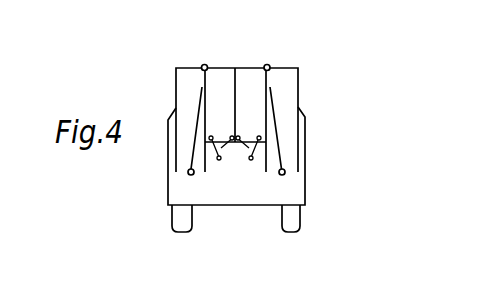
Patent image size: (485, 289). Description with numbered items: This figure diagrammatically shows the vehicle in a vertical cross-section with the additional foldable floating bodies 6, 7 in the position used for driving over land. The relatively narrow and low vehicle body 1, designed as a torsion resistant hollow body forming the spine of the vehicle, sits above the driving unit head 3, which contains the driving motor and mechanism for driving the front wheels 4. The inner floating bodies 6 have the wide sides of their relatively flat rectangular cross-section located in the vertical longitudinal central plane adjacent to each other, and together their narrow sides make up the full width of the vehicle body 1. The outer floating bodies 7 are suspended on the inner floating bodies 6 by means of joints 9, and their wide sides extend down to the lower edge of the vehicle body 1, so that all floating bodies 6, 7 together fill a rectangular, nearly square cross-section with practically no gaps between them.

The vehicle body 1 is at (232, 163).
The driving unit head 3 is at (300, 141).
The front wheels 4 is at (285, 225).
The inner floating bodies 6 is at (255, 70).
The outer floating bodies 7 is at (184, 68).
The joints 9 is at (205, 64).